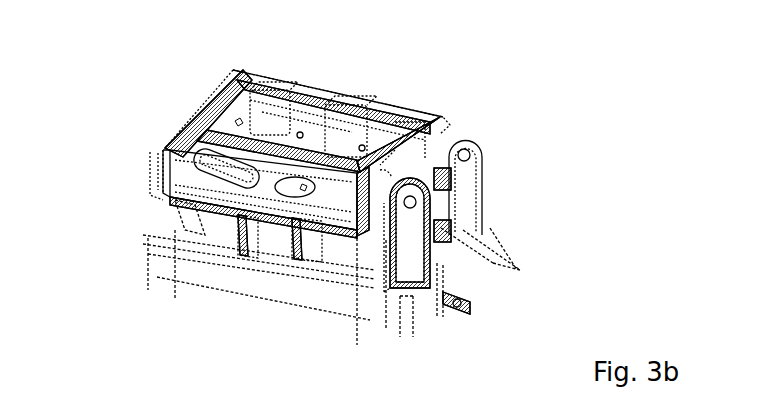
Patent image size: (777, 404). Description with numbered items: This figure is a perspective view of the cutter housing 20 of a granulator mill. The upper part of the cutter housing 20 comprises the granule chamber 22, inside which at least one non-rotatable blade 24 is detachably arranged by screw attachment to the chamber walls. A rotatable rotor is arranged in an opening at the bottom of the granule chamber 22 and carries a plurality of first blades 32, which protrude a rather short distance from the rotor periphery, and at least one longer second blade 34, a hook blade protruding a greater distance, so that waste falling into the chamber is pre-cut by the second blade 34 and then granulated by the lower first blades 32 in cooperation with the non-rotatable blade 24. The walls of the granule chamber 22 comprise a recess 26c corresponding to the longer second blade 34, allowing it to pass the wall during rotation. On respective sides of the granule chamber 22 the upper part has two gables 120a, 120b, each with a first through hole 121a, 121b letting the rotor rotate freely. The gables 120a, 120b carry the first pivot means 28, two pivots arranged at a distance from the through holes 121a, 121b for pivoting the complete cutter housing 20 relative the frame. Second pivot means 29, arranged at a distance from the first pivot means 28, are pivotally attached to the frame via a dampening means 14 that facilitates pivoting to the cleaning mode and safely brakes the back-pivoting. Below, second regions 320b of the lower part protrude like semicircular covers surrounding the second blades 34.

The dampening means 14 is at (438, 228).
The cutter housing 20 is at (453, 108).
The granule chamber 22 is at (200, 127).
The non-rotatable blade 24 is at (372, 128).
The recess 26c is at (292, 104).
The first pivot means 28 is at (450, 173).
The second pivot means 29 is at (440, 230).
The first blades 32 is at (218, 140).
The second blade 34 is at (293, 113).
The gable 120a is at (220, 110).
The gable 120b is at (423, 137).
The first through hole 121a is at (205, 138).
The first through hole 121b is at (380, 198).
The second regions 320b is at (240, 183).